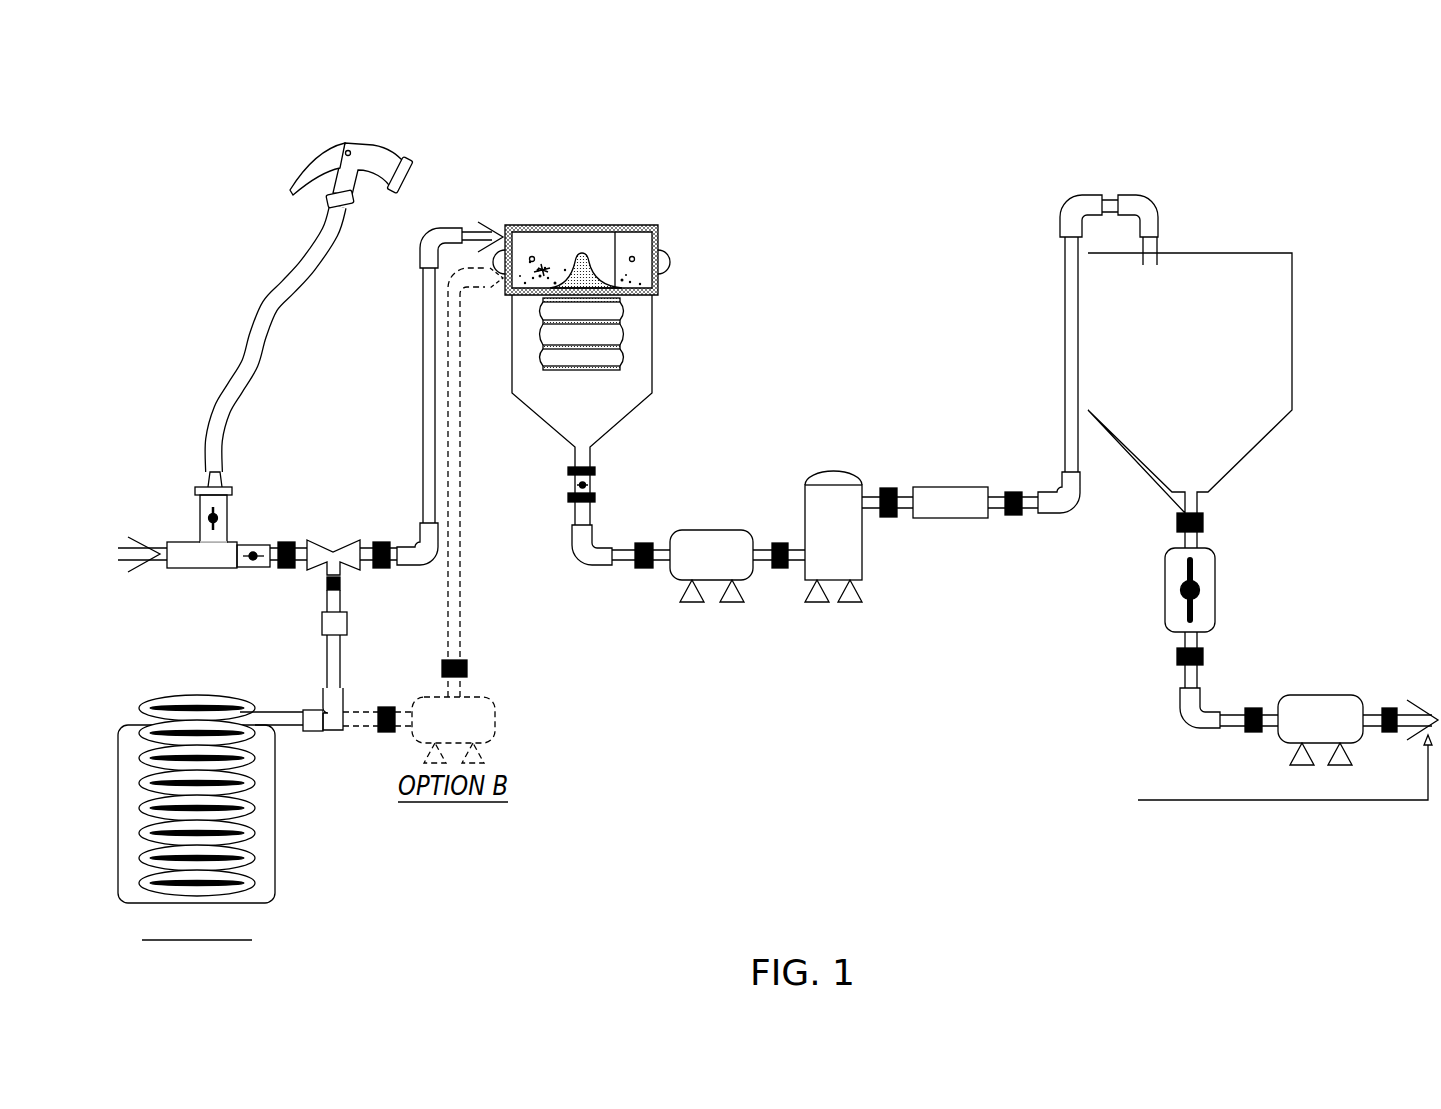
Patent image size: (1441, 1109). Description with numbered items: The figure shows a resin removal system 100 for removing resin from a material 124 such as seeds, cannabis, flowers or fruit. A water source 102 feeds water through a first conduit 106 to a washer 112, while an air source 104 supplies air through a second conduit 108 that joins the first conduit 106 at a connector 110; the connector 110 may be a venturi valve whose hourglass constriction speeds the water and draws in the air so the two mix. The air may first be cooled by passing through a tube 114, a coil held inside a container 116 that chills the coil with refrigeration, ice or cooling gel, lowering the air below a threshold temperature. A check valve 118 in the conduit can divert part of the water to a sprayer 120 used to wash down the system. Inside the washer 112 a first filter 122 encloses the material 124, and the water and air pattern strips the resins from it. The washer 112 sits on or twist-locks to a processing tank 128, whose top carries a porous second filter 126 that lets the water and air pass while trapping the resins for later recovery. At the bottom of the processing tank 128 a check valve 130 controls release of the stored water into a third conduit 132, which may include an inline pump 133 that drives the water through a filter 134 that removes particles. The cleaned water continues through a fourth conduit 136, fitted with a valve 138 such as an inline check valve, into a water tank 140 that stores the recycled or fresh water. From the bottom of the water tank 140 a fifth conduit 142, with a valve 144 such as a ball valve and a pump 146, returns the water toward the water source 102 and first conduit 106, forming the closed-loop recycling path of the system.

The resin removal system 100 is at (158, 95).
The water source 102 is at (113, 555).
The air source 104 is at (273, 903).
The first conduit 106 is at (233, 568).
The second conduit 108 is at (495, 293).
The connector 110 is at (317, 571).
The washer 112 is at (582, 224).
The tube 114 is at (249, 760).
The container 116 is at (276, 813).
The check valve 118 is at (200, 517).
The sprayer 120 is at (312, 162).
The first filter 122 is at (592, 268).
The material 124 is at (543, 275).
The second filter 126 is at (582, 371).
The processing tank 128 is at (653, 343).
The check valve 130 is at (598, 487).
The third conduit 132 is at (580, 563).
The pump 133 is at (710, 529).
The filter 134 is at (833, 471).
The fourth conduit 136 is at (1064, 353).
The valve 138 is at (950, 486).
The water tank 140 is at (1293, 343).
The fifth conduit 142 is at (1189, 726).
The valve 144 is at (1216, 590).
The pump 146 is at (1318, 694).